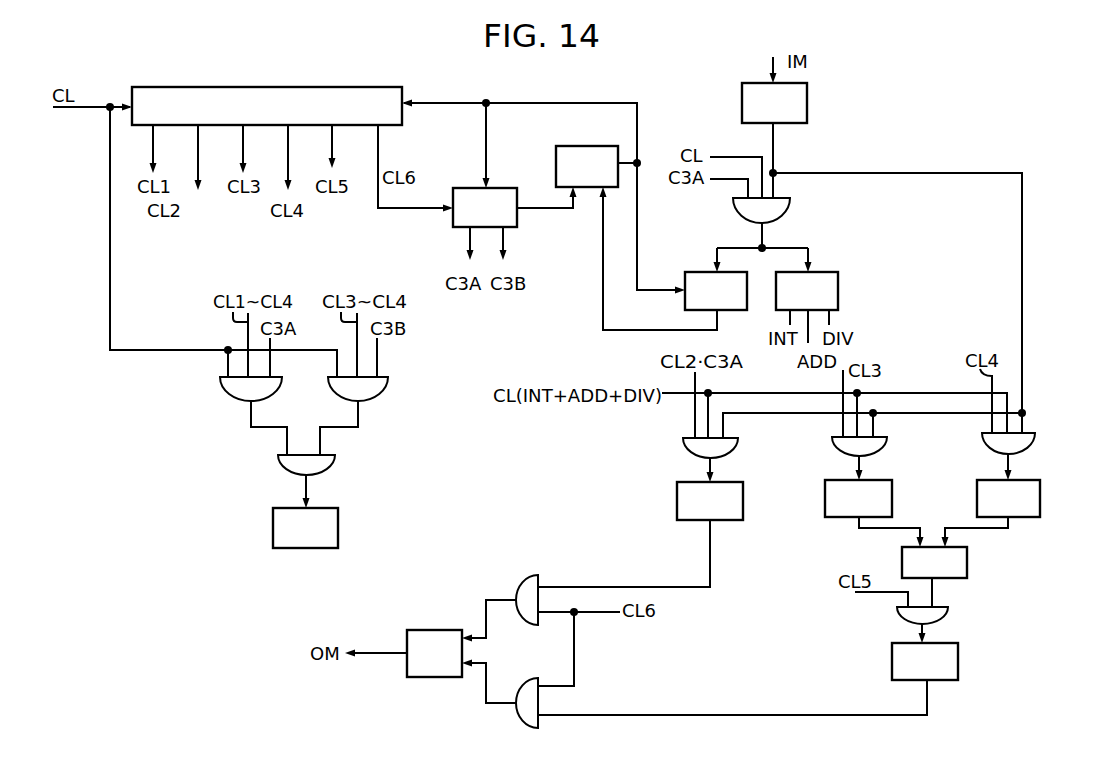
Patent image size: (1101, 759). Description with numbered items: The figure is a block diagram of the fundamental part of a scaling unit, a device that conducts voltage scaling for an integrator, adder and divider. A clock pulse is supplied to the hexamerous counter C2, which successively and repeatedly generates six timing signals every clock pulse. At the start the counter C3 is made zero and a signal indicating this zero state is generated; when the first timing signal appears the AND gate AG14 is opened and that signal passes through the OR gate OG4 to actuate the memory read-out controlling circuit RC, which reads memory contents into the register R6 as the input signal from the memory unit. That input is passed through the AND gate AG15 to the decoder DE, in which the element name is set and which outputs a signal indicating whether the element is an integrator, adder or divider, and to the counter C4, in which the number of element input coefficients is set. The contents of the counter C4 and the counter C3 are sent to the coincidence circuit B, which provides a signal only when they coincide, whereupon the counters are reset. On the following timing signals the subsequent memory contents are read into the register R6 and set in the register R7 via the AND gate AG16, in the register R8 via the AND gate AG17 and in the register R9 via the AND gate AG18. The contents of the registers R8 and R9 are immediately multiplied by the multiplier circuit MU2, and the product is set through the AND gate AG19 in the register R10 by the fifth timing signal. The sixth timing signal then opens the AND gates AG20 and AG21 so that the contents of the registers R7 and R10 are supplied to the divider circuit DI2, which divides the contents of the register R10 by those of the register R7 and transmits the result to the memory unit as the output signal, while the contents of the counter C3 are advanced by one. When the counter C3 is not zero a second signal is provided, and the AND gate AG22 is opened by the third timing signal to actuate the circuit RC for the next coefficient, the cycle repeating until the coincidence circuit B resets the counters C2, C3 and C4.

The counter C2 is at (267, 106).
The counter C3 is at (485, 207).
The coincidence circuit B is at (587, 166).
The register R6 is at (774, 103).
The AND gate AG15 is at (796, 203).
The counter C4 is at (716, 291).
The decoder DE is at (807, 291).
The AND gate AG14 is at (278, 392).
The AND gate AG22 is at (385, 392).
The OR gate OG4 is at (331, 466).
The memory read-out controlling circuit RC is at (305, 528).
The AND gate AG16 is at (735, 449).
The AND gate AG17 is at (884, 447).
The AND gate AG18 is at (1032, 445).
The register R7 is at (710, 501).
The register R8 is at (858, 498).
The register R9 is at (1008, 498).
The multiplier circuit MU2 is at (934, 562).
The AND gate AG19 is at (945, 615).
The register R10 is at (925, 661).
The AND gate AG20 is at (540, 578).
The AND gate AG21 is at (525, 680).
The divider circuit DI2 is at (434, 653).